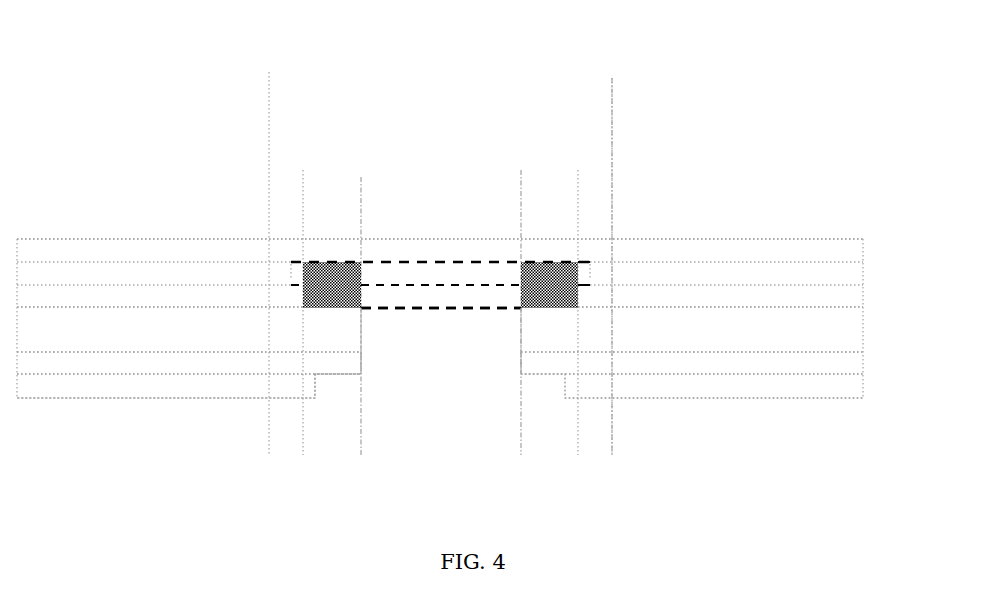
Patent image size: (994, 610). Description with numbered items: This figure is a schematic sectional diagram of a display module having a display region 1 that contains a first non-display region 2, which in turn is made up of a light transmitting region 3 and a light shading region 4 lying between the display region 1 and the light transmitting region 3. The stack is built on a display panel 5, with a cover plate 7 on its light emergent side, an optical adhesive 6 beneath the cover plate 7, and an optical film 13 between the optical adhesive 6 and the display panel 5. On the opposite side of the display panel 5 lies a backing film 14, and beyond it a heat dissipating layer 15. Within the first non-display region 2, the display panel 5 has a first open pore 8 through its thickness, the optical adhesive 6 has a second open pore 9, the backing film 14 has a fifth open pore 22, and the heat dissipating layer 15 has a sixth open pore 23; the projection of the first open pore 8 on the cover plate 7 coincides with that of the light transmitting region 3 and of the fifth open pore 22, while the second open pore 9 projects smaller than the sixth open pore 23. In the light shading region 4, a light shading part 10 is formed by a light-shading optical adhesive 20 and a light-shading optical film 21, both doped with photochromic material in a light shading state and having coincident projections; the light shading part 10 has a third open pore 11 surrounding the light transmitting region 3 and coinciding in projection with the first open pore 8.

The display region 1 is at (684, 133).
The first non-display region 2 is at (574, 102).
The light transmitting region 3 is at (433, 193).
The light shading region 4 is at (531, 185).
The display panel 5 is at (845, 329).
The optical adhesive 6 is at (853, 272).
The cover plate 7 is at (845, 249).
The first open pore 8 is at (436, 330).
The second open pore 9 is at (440, 283).
The light shading part 10 is at (508, 244).
The third open pore 11 is at (477, 308).
The optical film 13 is at (853, 295).
The backing film 14 is at (845, 363).
The heat dissipating layer 15 is at (853, 387).
The light-shading optical adhesive 20 is at (553, 263).
The light-shading optical film 21 is at (582, 262).
The fifth open pore 22 is at (393, 366).
The sixth open pore 23 is at (333, 386).